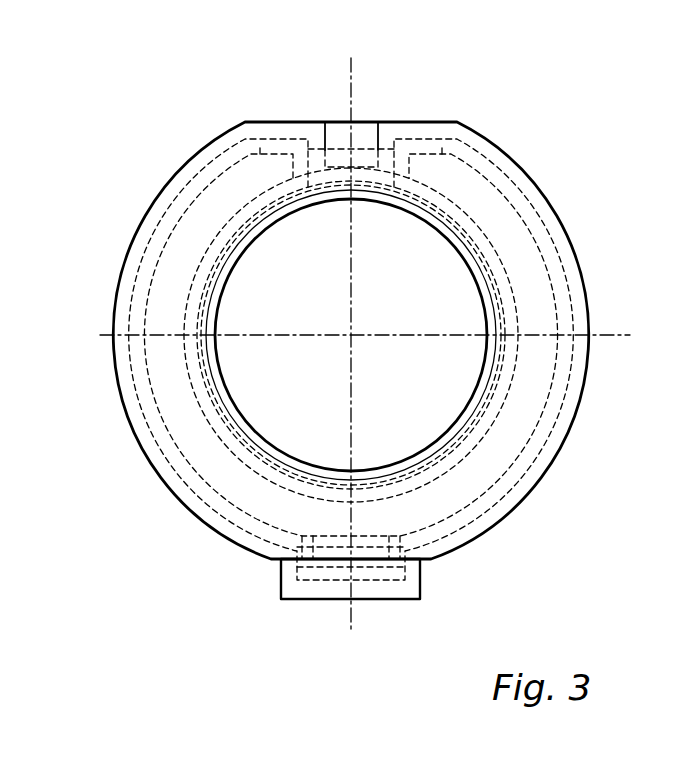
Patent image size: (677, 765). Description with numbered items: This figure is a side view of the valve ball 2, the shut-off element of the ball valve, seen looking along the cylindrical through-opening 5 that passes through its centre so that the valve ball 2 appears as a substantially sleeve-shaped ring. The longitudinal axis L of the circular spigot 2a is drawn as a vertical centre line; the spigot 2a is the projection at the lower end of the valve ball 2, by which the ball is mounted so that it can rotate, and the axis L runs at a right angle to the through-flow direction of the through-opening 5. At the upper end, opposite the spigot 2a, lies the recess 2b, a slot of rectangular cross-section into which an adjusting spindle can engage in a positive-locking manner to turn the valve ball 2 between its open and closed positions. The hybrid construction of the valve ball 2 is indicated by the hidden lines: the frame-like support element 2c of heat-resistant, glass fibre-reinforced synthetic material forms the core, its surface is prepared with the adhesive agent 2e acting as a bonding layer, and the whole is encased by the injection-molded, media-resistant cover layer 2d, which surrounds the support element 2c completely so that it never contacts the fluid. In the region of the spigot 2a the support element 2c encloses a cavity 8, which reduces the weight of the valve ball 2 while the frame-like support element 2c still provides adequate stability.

The valve ball 2 is at (562, 493).
The spigot 2a is at (297, 588).
The recess 2b is at (345, 138).
The support element 2c is at (512, 243).
The cover layer 2d is at (513, 175).
The adhesive agent 2e is at (572, 372).
The through-opening 5 is at (277, 397).
The cavity 8 is at (337, 541).
The longitudinal axis L is at (350, 290).